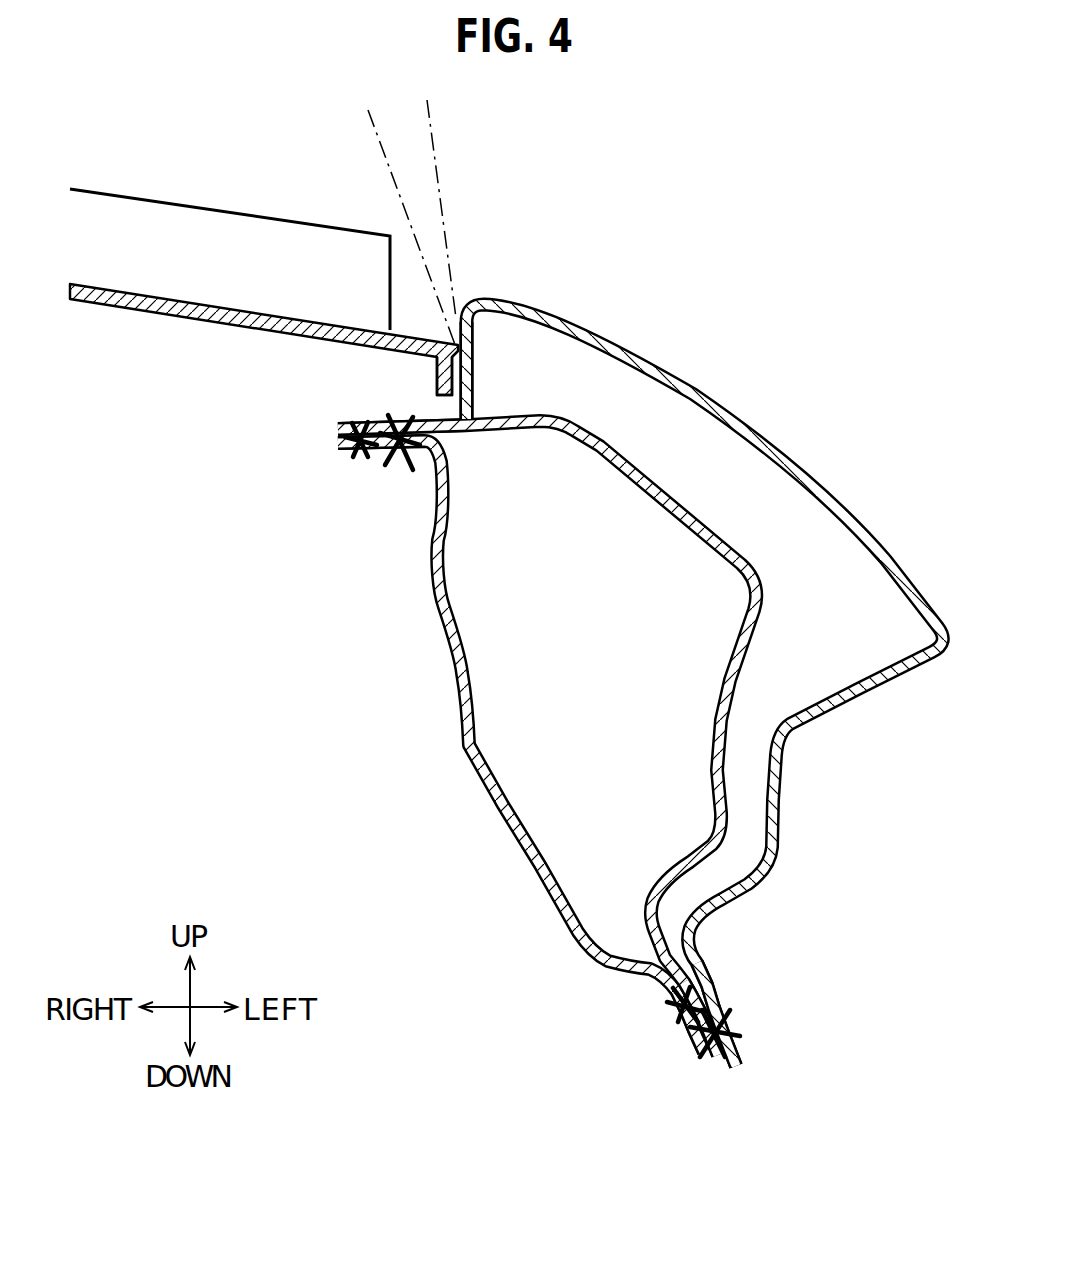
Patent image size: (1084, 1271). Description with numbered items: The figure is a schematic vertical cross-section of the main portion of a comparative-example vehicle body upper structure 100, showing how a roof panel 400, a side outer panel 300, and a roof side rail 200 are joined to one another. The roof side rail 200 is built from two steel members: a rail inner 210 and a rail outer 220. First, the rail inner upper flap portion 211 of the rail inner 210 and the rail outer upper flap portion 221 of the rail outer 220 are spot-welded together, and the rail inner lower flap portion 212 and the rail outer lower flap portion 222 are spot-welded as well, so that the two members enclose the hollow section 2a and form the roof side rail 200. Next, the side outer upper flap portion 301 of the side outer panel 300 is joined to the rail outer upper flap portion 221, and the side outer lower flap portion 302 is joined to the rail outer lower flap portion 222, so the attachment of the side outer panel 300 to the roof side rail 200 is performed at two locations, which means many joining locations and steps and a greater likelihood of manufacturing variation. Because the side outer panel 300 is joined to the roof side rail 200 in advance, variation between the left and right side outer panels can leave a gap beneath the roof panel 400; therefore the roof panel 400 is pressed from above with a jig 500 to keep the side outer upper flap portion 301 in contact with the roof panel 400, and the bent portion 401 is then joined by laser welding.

The vehicle body upper structure 100 is at (798, 273).
The roof side rail 200 is at (352, 680).
The rail inner 210 is at (506, 755).
The rail inner upper flap portion 211 is at (360, 455).
The rail inner lower flap portion 212 is at (660, 987).
The rail outer 220 is at (542, 743).
The rail outer upper flap portion 221 is at (353, 425).
The rail outer lower flap portion 222 is at (737, 1057).
The inflation chamber 2a is at (621, 685).
The side outer panel 300 is at (705, 686).
The side outer upper flap portion 301 is at (477, 395).
The side outer lower flap portion 302 is at (717, 990).
The roof panel 400 is at (264, 339).
The bent portion 401 is at (445, 378).
The jig 500 is at (197, 205).